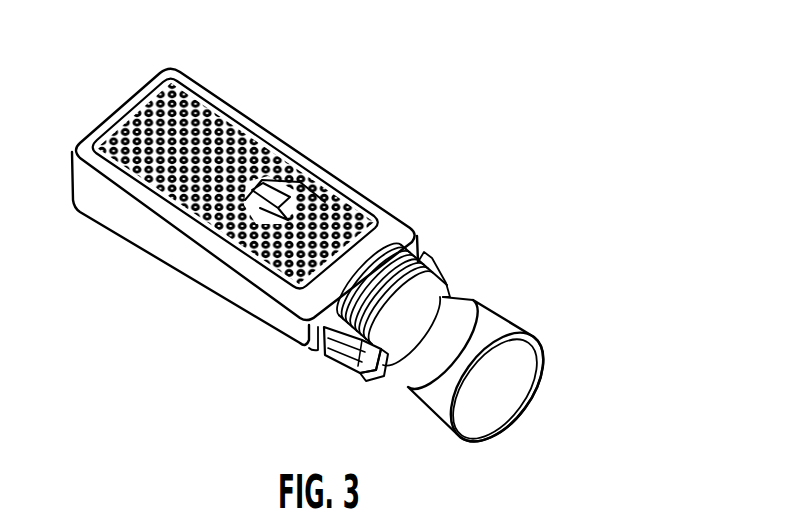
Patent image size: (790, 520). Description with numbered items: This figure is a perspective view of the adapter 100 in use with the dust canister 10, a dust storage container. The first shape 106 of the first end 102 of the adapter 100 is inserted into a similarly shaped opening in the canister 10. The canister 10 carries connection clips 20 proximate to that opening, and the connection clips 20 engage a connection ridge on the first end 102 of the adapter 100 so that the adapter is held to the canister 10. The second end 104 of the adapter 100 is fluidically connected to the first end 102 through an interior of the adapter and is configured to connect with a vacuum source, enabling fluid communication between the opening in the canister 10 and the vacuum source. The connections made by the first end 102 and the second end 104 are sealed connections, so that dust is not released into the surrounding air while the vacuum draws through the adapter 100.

The dust canister 10 is at (388, 117).
The connection clips 20 is at (315, 365).
The adapter 100 is at (543, 351).
The first end 102 is at (447, 271).
The second end 104 is at (552, 416).
The first shape 106 is at (365, 383).